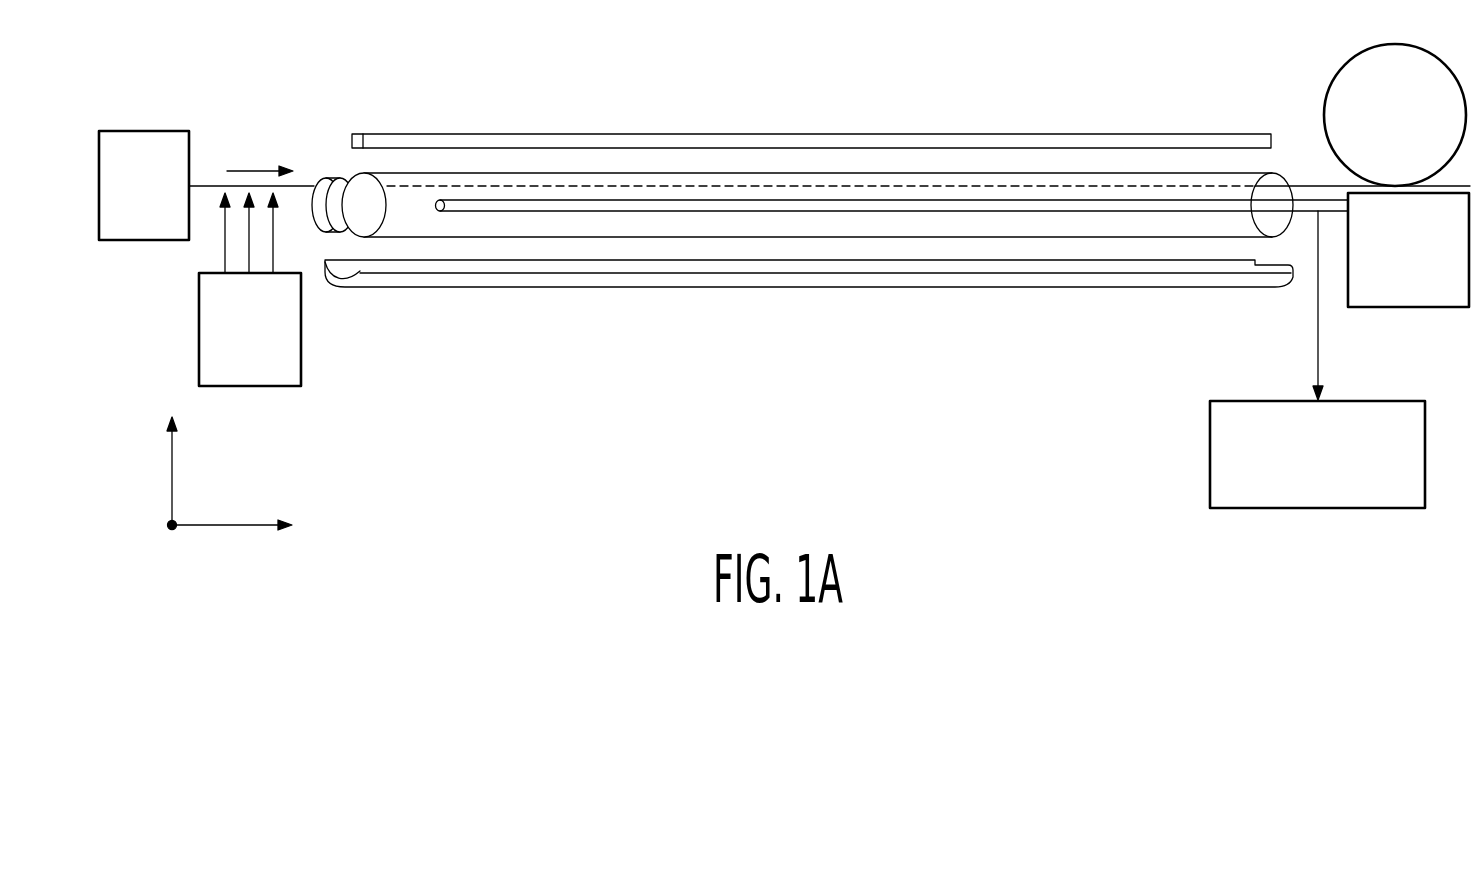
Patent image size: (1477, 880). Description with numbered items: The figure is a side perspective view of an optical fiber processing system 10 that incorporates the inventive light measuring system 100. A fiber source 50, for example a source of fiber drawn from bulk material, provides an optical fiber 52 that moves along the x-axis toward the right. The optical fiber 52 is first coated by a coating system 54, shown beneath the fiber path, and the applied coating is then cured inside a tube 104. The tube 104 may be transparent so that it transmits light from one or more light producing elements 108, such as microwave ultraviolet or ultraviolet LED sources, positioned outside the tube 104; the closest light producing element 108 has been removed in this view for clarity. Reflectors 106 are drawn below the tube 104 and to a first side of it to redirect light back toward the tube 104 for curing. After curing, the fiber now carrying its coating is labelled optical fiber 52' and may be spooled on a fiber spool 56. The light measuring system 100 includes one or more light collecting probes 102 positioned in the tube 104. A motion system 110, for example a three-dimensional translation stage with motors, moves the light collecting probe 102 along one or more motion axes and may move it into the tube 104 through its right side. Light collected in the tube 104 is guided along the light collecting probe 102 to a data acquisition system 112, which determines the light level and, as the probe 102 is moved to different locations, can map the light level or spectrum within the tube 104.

The optical fiber processing system 10 is at (597, 390).
The fiber source 50 is at (130, 222).
The optical fiber 52 is at (251, 132).
The optical fiber 52' is at (1362, 122).
The coating system 54 is at (236, 370).
The fiber spool 56 is at (1381, 163).
The light measuring system 100 is at (1186, 96).
The light collecting probe 102 is at (830, 200).
The tube 104 is at (425, 173).
The reflectors 106 is at (328, 178).
The light producing element 108 is at (630, 134).
The motion system 110 is at (1427, 291).
The data acquisition system 112 is at (1337, 496).